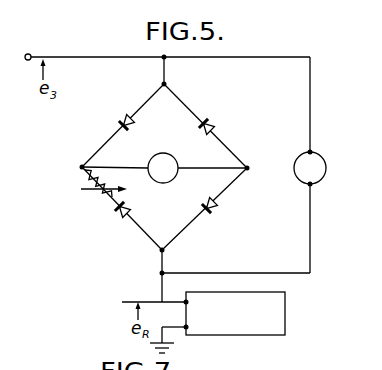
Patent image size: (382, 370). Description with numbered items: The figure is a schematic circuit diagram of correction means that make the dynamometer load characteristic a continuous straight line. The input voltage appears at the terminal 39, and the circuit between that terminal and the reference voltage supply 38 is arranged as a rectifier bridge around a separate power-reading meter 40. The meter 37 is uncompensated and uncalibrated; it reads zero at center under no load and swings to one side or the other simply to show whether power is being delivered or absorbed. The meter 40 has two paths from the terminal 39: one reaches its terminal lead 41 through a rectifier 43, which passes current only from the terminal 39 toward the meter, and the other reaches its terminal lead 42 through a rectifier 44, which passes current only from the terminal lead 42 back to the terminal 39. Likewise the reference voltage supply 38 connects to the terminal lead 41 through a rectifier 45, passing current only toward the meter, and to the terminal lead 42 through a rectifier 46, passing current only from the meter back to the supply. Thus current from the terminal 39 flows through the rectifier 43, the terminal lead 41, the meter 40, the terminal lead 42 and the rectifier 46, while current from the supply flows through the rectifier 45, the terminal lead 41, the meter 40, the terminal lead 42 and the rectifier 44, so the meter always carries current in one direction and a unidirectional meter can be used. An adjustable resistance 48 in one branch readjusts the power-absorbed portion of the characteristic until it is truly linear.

The meter 37 is at (326, 164).
The reference voltage supply 38 is at (250, 319).
The terminal 39 is at (30, 54).
The meter 40 is at (166, 153).
The terminal lead 41 is at (129, 167).
The terminal lead 42 is at (210, 170).
The rectifier 43 is at (123, 114).
The rectifier 44 is at (209, 121).
The rectifier 45 is at (128, 223).
The rectifier 46 is at (215, 209).
The resistance 48 is at (105, 196).